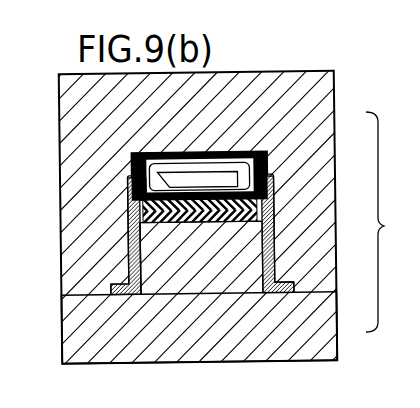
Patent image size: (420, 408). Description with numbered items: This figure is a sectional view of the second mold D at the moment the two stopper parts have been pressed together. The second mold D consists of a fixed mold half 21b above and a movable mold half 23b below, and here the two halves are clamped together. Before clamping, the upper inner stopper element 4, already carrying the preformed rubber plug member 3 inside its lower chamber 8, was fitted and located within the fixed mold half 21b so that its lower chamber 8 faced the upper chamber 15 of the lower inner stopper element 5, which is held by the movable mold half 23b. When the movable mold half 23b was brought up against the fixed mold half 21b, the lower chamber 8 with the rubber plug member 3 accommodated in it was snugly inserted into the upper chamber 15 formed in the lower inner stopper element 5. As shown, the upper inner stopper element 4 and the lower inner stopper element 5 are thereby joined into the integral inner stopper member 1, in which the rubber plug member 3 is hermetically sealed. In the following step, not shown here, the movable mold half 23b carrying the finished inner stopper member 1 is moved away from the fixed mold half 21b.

The inner stopper member 1 is at (240, 163).
The rubber plug member 3 is at (262, 212).
The upper inner stopper element 4 is at (268, 166).
The lower inner stopper element 5 is at (273, 250).
The lower chamber 8 is at (142, 240).
The upper chamber 15 is at (130, 192).
The fixed mold half 21b is at (311, 131).
The movable mold half 23b is at (313, 311).
The second mold D is at (399, 235).